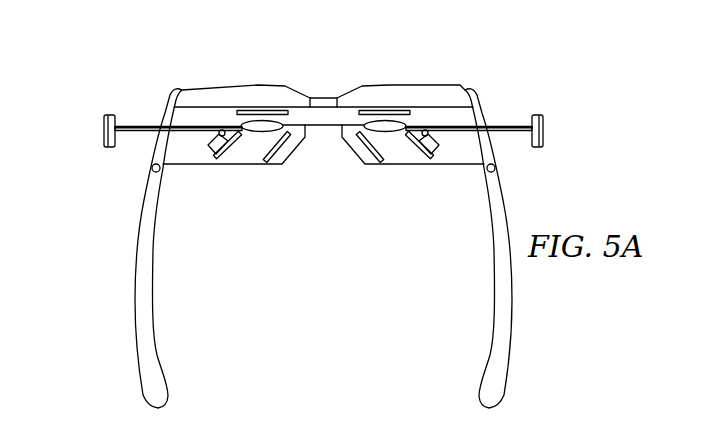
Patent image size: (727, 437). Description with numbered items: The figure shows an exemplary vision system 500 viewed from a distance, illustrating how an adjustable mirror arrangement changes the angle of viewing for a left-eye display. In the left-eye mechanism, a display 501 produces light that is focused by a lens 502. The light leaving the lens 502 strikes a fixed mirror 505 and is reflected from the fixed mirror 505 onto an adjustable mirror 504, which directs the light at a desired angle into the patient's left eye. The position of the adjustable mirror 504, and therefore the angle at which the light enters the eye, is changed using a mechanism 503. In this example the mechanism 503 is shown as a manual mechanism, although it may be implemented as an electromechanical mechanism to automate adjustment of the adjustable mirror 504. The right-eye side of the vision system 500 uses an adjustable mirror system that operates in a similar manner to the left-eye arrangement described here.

The vision system 500 is at (450, 61).
The display 501 is at (268, 128).
The lens 502 is at (273, 124).
The mechanism 503 is at (103, 127).
The adjustable mirror 504 is at (228, 157).
The fixed mirror 505 is at (283, 156).